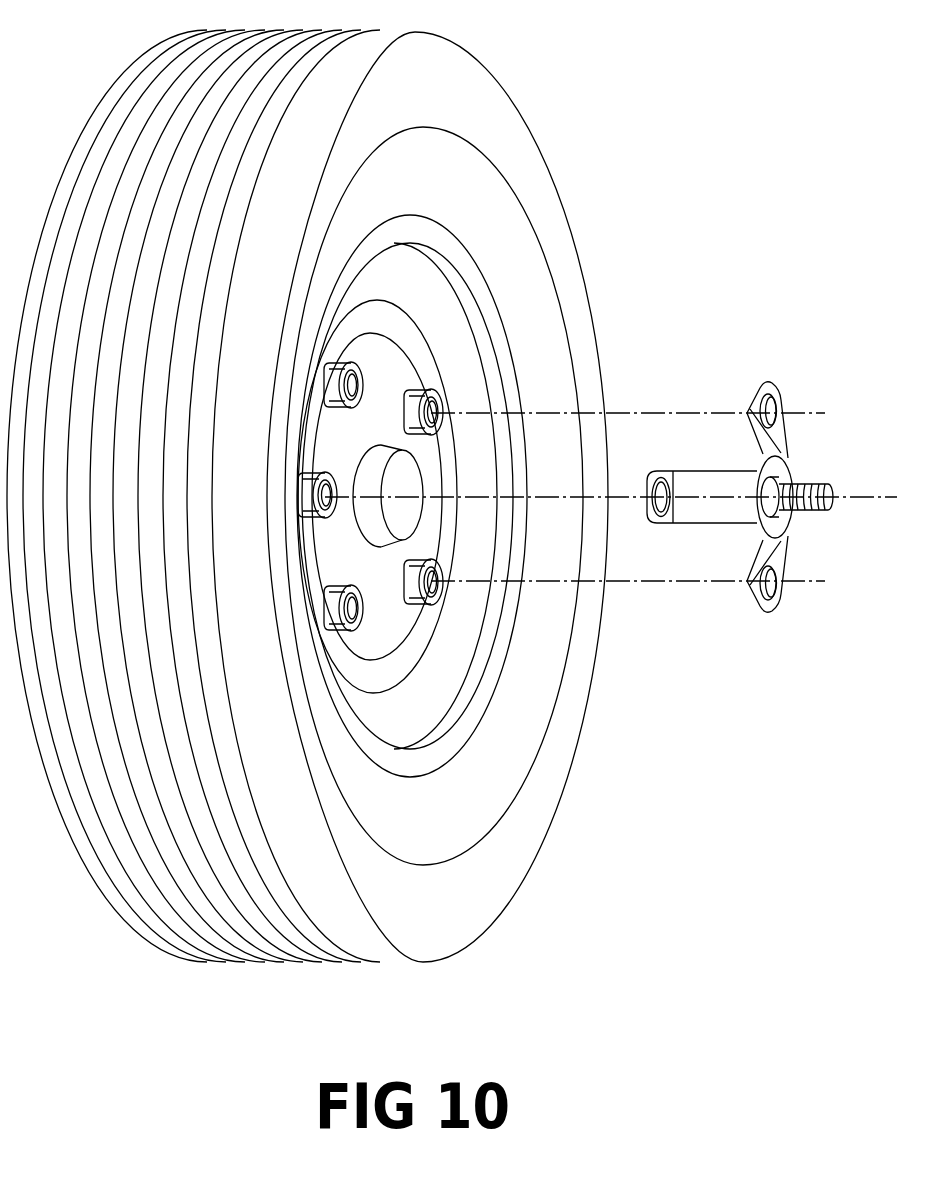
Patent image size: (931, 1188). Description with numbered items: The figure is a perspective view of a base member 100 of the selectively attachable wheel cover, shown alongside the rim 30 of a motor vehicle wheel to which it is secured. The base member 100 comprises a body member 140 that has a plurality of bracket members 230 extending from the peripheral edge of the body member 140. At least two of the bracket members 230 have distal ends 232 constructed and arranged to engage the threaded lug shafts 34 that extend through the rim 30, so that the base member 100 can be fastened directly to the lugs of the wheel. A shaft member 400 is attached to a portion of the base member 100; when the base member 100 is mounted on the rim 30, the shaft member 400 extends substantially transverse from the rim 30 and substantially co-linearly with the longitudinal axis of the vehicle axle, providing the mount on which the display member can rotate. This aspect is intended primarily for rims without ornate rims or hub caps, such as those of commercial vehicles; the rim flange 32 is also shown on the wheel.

The rim 30 is at (487, 300).
The rim flange 32 is at (470, 247).
The threaded lug shafts 34 is at (437, 405).
The base member 100 is at (760, 489).
The body member 140 is at (778, 467).
The bracket members 230 is at (712, 480).
The distal ends 232 is at (665, 498).
The shaft member 400 is at (872, 525).